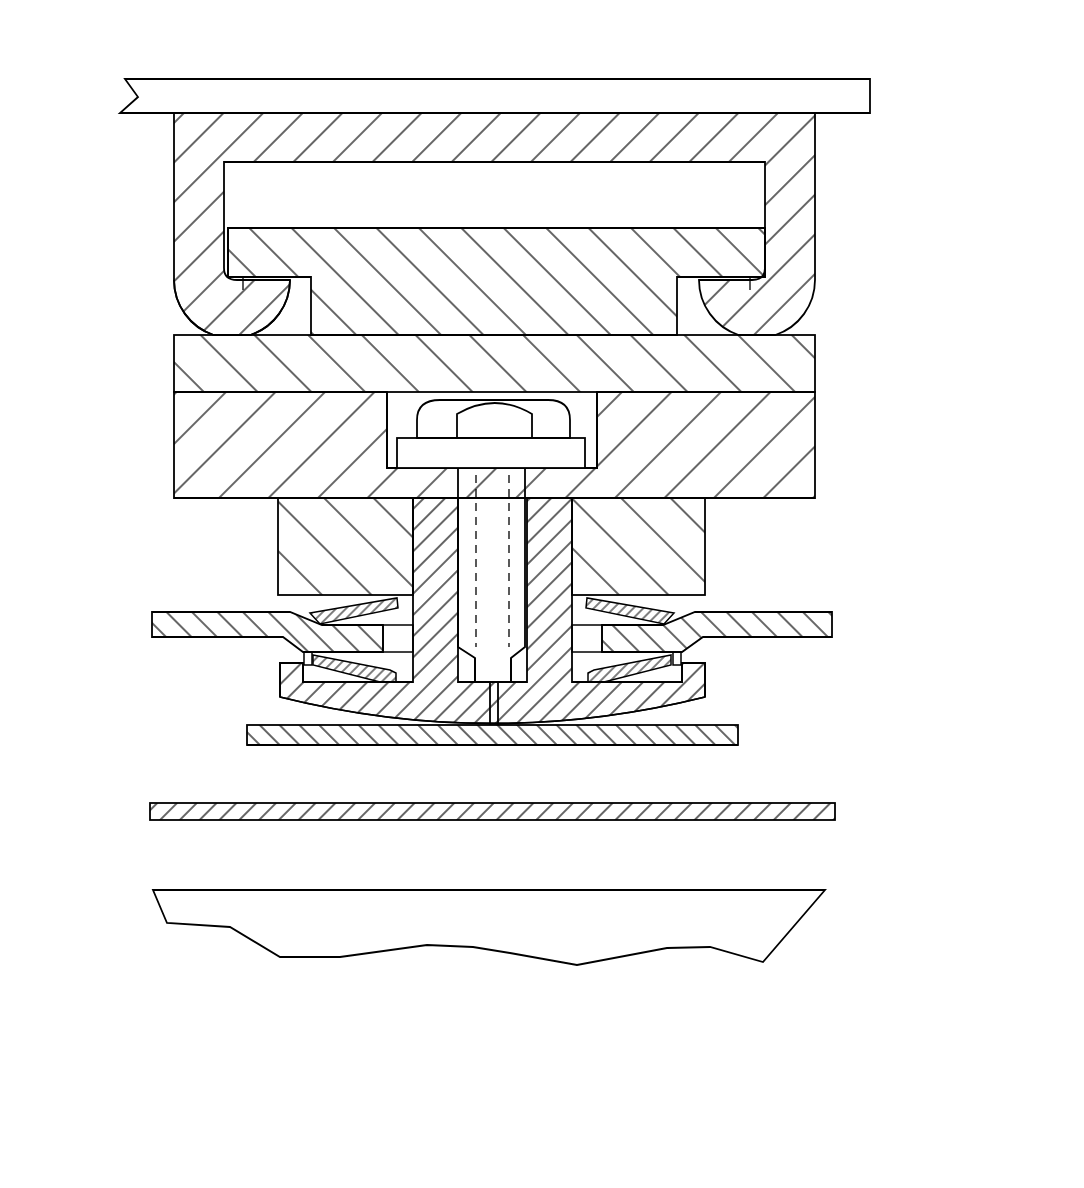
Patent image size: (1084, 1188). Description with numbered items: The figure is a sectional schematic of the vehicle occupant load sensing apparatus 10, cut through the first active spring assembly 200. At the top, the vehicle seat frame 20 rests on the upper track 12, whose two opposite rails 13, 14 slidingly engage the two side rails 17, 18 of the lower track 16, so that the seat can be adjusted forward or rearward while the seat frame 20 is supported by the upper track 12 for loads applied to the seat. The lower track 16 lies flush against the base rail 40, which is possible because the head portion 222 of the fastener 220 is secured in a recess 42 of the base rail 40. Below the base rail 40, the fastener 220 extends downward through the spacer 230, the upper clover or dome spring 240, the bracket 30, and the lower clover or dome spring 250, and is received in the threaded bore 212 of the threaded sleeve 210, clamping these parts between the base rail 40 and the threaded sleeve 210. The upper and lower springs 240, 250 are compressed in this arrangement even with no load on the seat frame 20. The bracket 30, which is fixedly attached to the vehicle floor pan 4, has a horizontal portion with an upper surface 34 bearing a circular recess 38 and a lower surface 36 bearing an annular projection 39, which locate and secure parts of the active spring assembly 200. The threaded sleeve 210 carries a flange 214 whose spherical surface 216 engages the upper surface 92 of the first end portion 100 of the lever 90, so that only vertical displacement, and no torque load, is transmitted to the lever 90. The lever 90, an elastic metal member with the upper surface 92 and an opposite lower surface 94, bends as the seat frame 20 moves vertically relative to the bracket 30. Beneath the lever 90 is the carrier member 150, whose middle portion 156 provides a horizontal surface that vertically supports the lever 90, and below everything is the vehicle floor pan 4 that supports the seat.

The vehicle occupant load sensing apparatus 10 is at (143, 52).
The vehicle seat frame 20 is at (835, 77).
The upper track 12 is at (822, 171).
The rail 13 is at (206, 293).
The rail 14 is at (795, 256).
The lower track 16 is at (820, 362).
The side rail 17 is at (255, 247).
The side rail 18 is at (735, 247).
The base rail 40 is at (820, 467).
The recess 42 is at (401, 412).
The fastener 220 is at (590, 418).
The head portion 222 is at (492, 412).
The threaded bore 212 is at (514, 668).
The threaded sleeve 210 is at (408, 530).
The spherical surface 216 is at (650, 705).
The flange 214 is at (652, 703).
The spacer 230 is at (712, 532).
The upper clover spring 240 is at (352, 600).
The lower clover spring 250 is at (611, 682).
The annular projection 39 is at (300, 655).
The bracket 30 is at (522, 616).
The upper surface 34 is at (522, 616).
The lower surface 36 is at (780, 607).
The circular recess 38 is at (298, 612).
The first active spring assembly 200 is at (481, 684).
The lower surface 94 is at (429, 791).
The upper surface 92 is at (429, 750).
The first end portion 100 is at (357, 747).
The lever 90 is at (278, 750).
The carrier member 150 is at (542, 836).
The middle portion 156 is at (842, 812).
The vehicle floor pan 4 is at (701, 886).